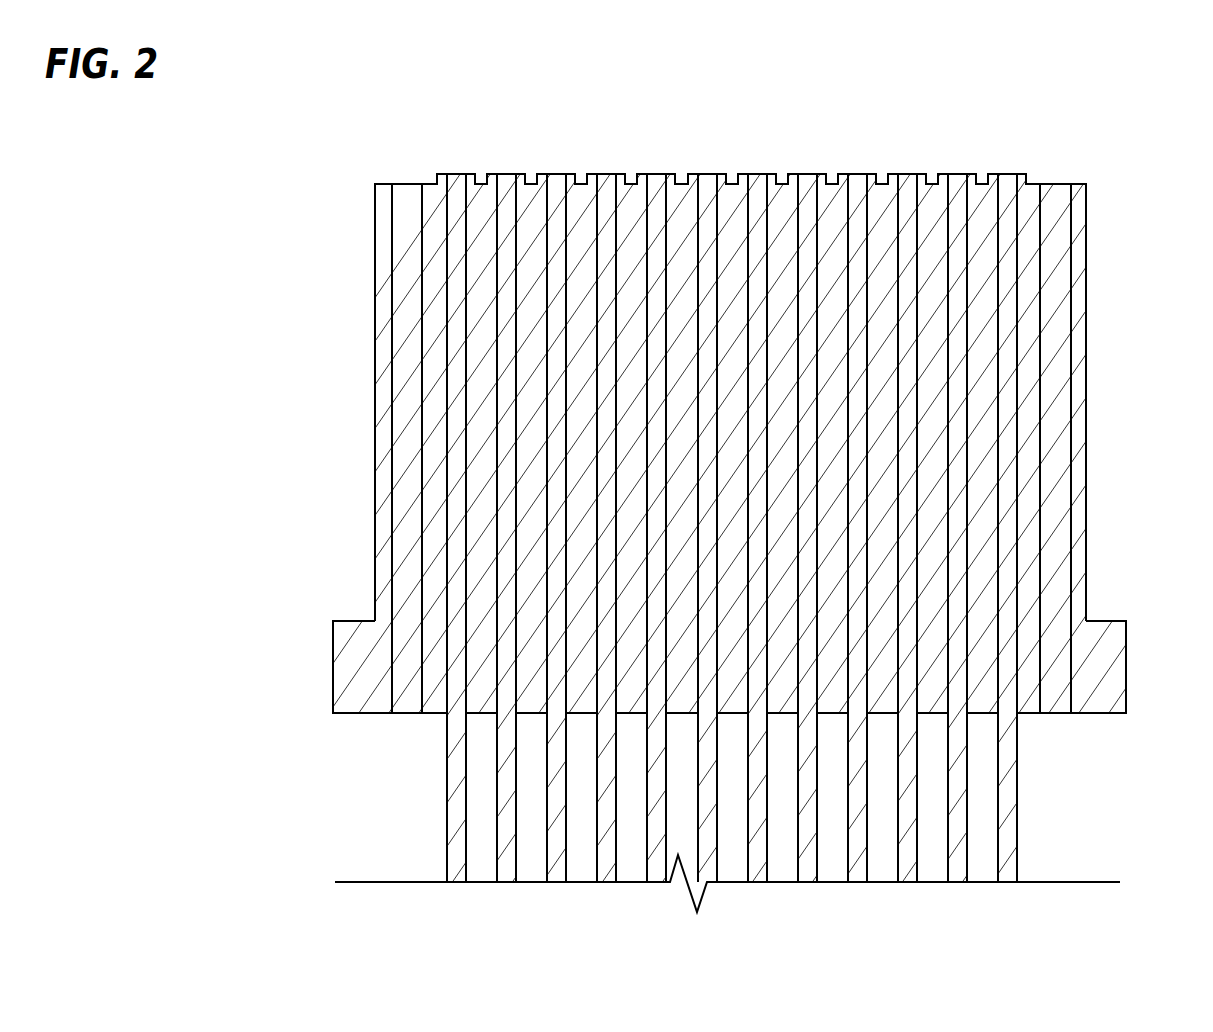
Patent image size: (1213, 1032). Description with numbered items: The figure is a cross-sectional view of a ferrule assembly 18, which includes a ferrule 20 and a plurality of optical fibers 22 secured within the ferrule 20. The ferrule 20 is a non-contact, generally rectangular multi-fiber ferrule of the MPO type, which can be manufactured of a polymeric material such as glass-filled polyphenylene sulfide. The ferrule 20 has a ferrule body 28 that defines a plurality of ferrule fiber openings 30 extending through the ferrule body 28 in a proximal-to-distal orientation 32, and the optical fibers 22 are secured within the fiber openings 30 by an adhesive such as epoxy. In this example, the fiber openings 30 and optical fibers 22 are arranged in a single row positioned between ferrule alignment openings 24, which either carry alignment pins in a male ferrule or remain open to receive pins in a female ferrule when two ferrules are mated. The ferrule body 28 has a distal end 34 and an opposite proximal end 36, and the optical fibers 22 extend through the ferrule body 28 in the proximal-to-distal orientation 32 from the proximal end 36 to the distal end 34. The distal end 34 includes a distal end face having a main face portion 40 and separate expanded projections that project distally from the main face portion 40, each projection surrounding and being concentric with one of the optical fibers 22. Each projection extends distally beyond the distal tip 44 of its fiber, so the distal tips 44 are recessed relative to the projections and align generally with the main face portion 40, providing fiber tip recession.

The ferrule assembly 18 is at (1092, 120).
The ferrule 20 is at (1081, 189).
The optical fibers 22 is at (1012, 248).
The ferrule alignment openings 24 is at (392, 430).
The ferrule body 28 is at (1086, 495).
The ferrule fiber openings 30 is at (1017, 312).
The proximal-to-distal orientation 32 is at (282, 714).
The distal end 34 is at (377, 186).
The proximal end 36 is at (335, 714).
The main face portion 40 is at (434, 182).
The distal tip 44 is at (604, 187).